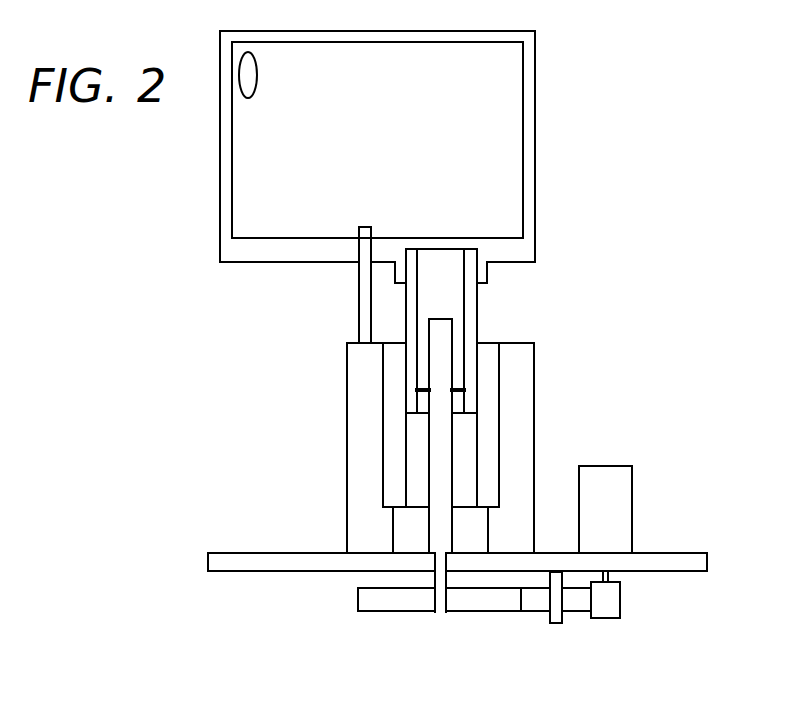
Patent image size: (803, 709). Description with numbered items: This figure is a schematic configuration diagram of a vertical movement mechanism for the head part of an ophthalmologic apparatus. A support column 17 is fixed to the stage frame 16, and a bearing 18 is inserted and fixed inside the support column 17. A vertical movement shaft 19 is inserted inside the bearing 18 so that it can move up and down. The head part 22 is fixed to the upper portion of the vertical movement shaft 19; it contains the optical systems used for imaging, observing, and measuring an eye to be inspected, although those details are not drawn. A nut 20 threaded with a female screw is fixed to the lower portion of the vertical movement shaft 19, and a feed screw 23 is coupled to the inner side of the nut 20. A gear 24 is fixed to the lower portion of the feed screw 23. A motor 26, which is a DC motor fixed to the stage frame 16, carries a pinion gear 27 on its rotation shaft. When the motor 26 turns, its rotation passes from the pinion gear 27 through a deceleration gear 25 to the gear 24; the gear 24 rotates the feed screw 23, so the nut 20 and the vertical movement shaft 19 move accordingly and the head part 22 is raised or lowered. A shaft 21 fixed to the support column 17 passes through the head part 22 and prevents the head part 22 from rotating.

The stage frame 16 is at (212, 559).
The support column 17 is at (355, 486).
The bearing 18 is at (497, 368).
The vertical movement shaft 19 is at (472, 306).
The nut 20 is at (423, 403).
The shaft 21 is at (360, 294).
The head part 22 is at (513, 124).
The feed screw 23 is at (440, 447).
The gear 24 is at (358, 600).
The deceleration gear 25 is at (533, 605).
The motor 26 is at (624, 498).
The pinion gear 27 is at (617, 603).